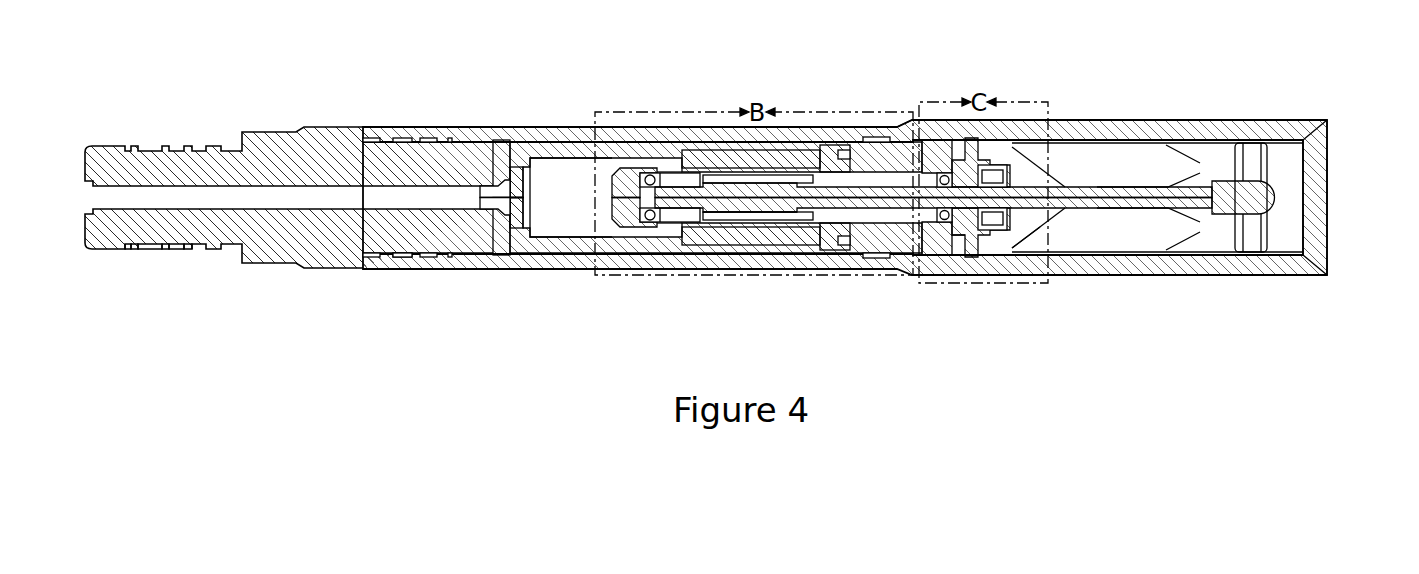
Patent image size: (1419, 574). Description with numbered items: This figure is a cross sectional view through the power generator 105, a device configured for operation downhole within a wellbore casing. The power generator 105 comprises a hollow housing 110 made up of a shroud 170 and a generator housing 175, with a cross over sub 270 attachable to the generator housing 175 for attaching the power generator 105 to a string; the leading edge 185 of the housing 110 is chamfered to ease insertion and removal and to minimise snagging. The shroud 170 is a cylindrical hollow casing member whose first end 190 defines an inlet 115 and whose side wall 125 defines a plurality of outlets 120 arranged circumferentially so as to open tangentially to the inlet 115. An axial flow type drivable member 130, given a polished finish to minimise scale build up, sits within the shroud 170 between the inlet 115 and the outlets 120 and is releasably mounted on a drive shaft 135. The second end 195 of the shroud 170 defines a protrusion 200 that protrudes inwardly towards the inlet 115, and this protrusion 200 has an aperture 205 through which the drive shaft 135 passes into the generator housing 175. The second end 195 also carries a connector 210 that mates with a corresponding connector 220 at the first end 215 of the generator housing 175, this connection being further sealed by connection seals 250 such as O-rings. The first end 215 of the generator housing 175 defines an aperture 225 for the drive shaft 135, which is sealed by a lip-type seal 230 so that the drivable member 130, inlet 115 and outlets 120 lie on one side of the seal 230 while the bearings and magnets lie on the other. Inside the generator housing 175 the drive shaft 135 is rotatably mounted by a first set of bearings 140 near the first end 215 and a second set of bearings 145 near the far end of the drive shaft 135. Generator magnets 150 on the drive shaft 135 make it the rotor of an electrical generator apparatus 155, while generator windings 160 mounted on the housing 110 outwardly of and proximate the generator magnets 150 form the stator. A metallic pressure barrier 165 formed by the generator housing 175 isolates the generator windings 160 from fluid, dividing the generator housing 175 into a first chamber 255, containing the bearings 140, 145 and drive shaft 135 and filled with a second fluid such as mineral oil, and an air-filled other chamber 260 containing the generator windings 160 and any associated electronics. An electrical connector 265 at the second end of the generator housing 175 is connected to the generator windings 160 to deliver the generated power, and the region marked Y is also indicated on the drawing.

The power generator 105 is at (1293, 275).
The housing 110 is at (1178, 278).
The inlet 115 is at (1318, 228).
The outlets 120 is at (1103, 162).
The side wall 125 is at (1168, 118).
The drivable member 130 is at (1268, 167).
The drive shaft 135 is at (1102, 206).
The first set of bearings 140 is at (945, 223).
The second set of bearings 145 is at (650, 173).
The generator magnets 150 is at (738, 183).
The electrical generator apparatus 155 is at (832, 248).
The generator windings 160 is at (782, 148).
The pressure barrier 165 is at (830, 147).
The shroud 170 is at (1237, 118).
The generator housing 175 is at (583, 262).
The leading edge 185 is at (293, 265).
The first end 190 is at (1328, 118).
The second end 195 is at (880, 262).
The protrusion 200 is at (988, 168).
The aperture 205 is at (1062, 187).
The connector 210 is at (903, 123).
The first end 215 is at (1012, 230).
The connector 220 is at (876, 137).
The aperture 225 is at (1000, 226).
The seal 230 is at (946, 172).
The connection seals 250 is at (982, 232).
The first chamber 255 is at (832, 215).
The other chamber 260 is at (570, 182).
The electrical connector 265 is at (487, 196).
The cross over sub 270 is at (190, 240).
The notch Y is at (400, 256).